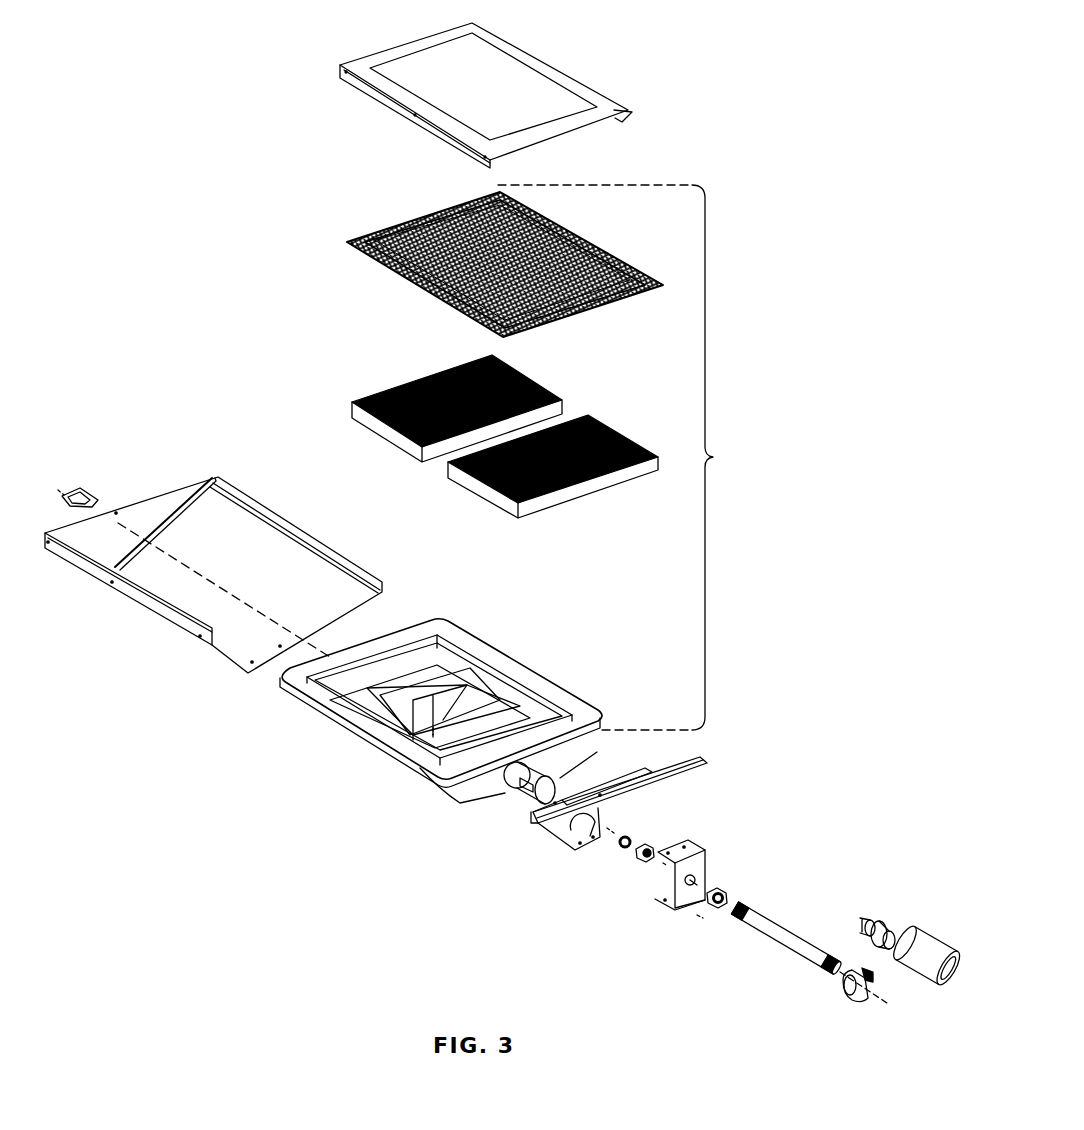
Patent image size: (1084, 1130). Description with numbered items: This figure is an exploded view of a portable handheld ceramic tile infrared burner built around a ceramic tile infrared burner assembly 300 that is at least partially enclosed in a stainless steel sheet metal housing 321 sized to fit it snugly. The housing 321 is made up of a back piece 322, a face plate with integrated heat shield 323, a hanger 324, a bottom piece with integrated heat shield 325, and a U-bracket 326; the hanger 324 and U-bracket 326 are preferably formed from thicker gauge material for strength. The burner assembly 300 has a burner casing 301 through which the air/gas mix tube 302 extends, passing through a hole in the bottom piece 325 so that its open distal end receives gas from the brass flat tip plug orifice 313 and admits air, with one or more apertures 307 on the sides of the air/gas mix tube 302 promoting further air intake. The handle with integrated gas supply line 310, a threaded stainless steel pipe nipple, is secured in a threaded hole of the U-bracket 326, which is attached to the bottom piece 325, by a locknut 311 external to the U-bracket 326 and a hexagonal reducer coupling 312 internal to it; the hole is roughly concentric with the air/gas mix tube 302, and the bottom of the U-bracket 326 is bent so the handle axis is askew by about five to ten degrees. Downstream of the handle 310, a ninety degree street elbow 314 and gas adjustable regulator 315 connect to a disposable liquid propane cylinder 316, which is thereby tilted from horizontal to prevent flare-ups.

The ceramic tile infrared burner assembly 300 is at (631, 457).
The burner casing 301 is at (530, 670).
The air/gas mix tube 302 is at (450, 735).
The apertures 307 is at (515, 788).
The handle with integrated gas supply line 310 is at (772, 906).
The locknut 311 is at (710, 912).
The reducer coupling 312 is at (642, 862).
The brass flat tip plug orifice 313 is at (621, 848).
The 90 degree street elbow 314 is at (858, 1017).
The gas adjustable regulator 315 is at (890, 917).
The disposable liquid propane cylinder 316 is at (923, 927).
The housing 321 is at (165, 640).
The back piece 322 is at (232, 557).
The face plate with integrated heat shield 323 is at (535, 68).
The hanger 324 is at (94, 488).
The bottom piece with integrated heat shield 325 is at (704, 752).
The U-bracket 326 is at (704, 835).